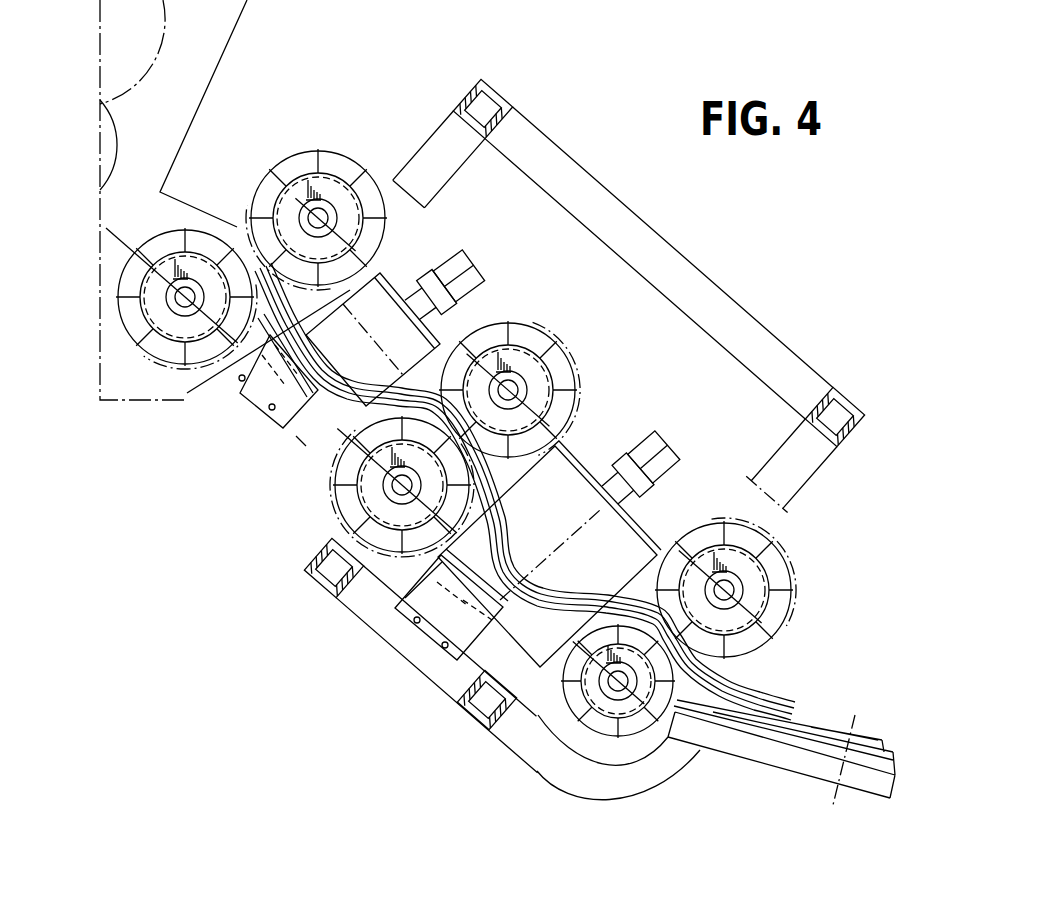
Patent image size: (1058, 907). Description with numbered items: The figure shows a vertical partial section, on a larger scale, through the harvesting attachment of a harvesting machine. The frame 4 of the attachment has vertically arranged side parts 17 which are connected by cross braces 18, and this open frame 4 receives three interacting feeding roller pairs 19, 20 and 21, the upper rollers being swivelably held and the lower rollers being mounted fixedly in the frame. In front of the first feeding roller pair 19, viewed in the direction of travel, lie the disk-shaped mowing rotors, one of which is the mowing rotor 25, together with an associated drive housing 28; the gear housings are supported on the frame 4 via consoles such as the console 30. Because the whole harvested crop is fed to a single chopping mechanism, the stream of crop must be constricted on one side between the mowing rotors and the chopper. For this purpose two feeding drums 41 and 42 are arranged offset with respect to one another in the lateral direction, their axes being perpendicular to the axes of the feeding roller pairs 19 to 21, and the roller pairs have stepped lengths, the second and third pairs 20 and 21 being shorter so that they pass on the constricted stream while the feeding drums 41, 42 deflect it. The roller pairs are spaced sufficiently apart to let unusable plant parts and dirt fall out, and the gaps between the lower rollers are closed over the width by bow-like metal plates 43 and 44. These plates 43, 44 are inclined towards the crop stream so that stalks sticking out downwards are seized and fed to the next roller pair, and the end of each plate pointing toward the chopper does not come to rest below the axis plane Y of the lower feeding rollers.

The frame 4 is at (779, 281).
The side parts 17 is at (798, 480).
The cross braces 18 is at (500, 92).
The feeding roller pair 19 is at (802, 580).
The feeding roller pair 20 is at (529, 318).
The feeding roller pair 21 is at (320, 150).
The mowing rotor 25 is at (790, 725).
The drive housing 28 is at (873, 775).
The console 30 is at (660, 765).
The feeding drum 41 is at (590, 466).
The feeding drum 42 is at (388, 272).
The bow-like metal plate 43 is at (395, 608).
The bow-like metal plate 44 is at (262, 398).
The axis plane Y is at (300, 440).